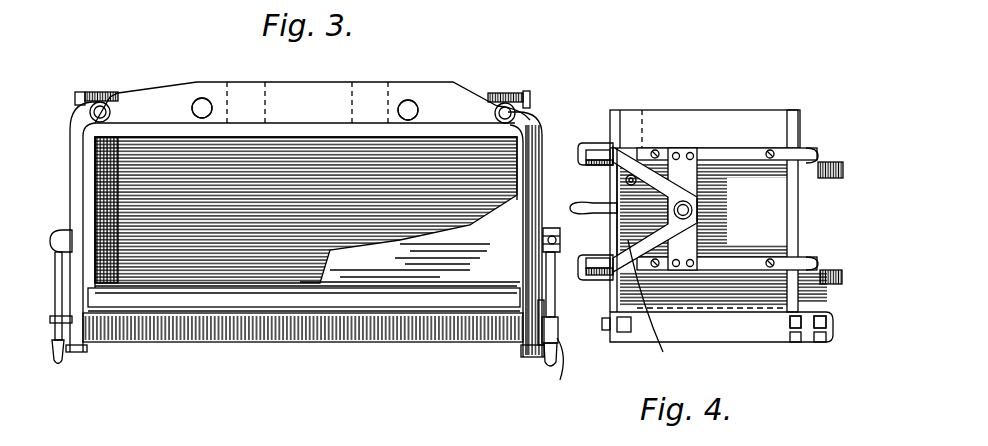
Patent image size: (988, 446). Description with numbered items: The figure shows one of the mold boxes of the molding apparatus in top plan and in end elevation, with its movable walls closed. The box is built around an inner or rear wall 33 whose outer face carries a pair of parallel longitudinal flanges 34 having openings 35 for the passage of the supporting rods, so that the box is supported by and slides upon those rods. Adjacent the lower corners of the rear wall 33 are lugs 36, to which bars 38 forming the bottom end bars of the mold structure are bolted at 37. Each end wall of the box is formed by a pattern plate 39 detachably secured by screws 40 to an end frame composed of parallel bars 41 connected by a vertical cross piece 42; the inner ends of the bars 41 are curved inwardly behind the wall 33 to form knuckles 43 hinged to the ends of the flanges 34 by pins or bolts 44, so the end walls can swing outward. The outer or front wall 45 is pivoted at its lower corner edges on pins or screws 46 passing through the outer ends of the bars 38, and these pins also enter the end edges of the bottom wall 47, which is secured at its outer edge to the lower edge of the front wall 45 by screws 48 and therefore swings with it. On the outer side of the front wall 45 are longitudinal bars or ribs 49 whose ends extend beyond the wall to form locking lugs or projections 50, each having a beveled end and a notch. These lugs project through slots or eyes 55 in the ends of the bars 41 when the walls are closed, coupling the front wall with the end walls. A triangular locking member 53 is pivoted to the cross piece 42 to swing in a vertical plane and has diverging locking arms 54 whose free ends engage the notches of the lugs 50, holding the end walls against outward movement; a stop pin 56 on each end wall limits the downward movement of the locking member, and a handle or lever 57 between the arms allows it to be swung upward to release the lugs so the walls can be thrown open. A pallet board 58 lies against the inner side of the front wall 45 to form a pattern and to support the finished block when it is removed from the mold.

In FIG. 3, the inner or rear wall 33 is at (297, 130).
In FIG. 4, the inner or rear wall 33 is at (797, 203).
In FIG. 3, the longitudinal flanges 34 is at (400, 88).
In FIG. 4, the longitudinal flanges 34 is at (833, 264).
In FIG. 3, the openings 35 is at (200, 100).
In FIG. 3, the lugs 36 is at (105, 98).
In FIG. 4, the lugs 36 is at (832, 278).
In FIG. 3, the bolts 37 is at (81, 92).
In FIG. 4, the bolts 37 is at (816, 342).
In FIG. 3, the bars 38 is at (90, 96).
In FIG. 4, the bars 38 is at (669, 123).
In FIG. 3, the pattern plates 39 is at (93, 268).
In FIG. 4, the screws 40 is at (774, 150).
In FIG. 3, the bars 41 is at (526, 178).
In FIG. 4, the bars 41 is at (751, 152).
In FIG. 4, the vertical cross piece 42 is at (692, 176).
In FIG. 3, the knuckles 43 is at (517, 114).
In FIG. 3, the pins or bolts 44 is at (518, 110).
In FIG. 3, the outer or front wall 45 is at (181, 313).
In FIG. 4, the outer or front wall 45 is at (620, 108).
In FIG. 4, the pins or screws 46 is at (620, 336).
In FIG. 3, the bottom wall 47 is at (293, 272).
In FIG. 4, the screws 48 is at (612, 314).
In FIG. 3, the longitudinal bars or ribs 49 is at (421, 342).
In FIG. 3, the locking lugs or projections 50 is at (560, 340).
In FIG. 3, the triangular locking member 53 is at (558, 274).
In FIG. 4, the triangular locking member 53 is at (695, 232).
In FIG. 4, the locking arms 54 is at (653, 309).
In FIG. 3, the slots or eyes 55 is at (533, 348).
In FIG. 4, the slots or eyes 55 is at (590, 142).
In FIG. 4, the stop pin 56 is at (626, 182).
In FIG. 3, the handle or lever 57 is at (58, 365).
In FIG. 4, the handle or lever 57 is at (594, 214).
In FIG. 3, the pallet board 58 is at (360, 300).